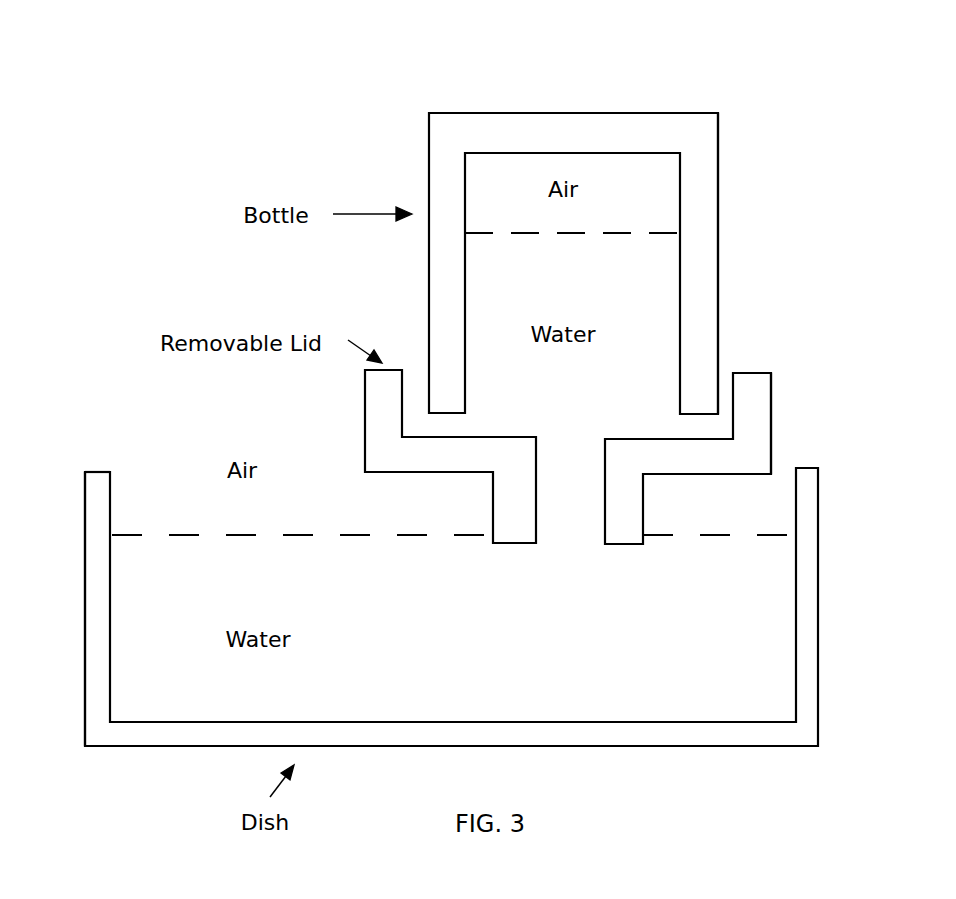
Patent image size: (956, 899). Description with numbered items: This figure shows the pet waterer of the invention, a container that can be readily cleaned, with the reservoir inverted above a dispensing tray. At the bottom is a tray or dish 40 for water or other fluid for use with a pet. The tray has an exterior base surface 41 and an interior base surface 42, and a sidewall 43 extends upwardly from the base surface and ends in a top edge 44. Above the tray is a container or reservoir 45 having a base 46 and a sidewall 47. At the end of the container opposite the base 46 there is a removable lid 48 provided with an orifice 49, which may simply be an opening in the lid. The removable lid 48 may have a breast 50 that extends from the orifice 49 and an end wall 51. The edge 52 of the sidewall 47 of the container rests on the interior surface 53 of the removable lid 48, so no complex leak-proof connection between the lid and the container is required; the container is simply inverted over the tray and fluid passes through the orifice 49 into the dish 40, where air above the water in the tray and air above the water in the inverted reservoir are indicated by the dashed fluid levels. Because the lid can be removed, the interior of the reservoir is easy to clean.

The tray or dish 40 is at (175, 746).
The exterior base surface 41 is at (648, 746).
The interior base surface 42 is at (419, 720).
The sidewall 43 is at (85, 627).
The top edge 44 is at (95, 472).
The container or reservoir 45 is at (429, 167).
The base 46 is at (600, 113).
The sidewall 47 is at (718, 285).
The removable lid 48 is at (771, 403).
The orifice 49 is at (606, 538).
The breast 50 is at (697, 474).
The end wall 51 is at (771, 448).
The edge 52 is at (692, 416).
The interior surface 53 is at (622, 439).